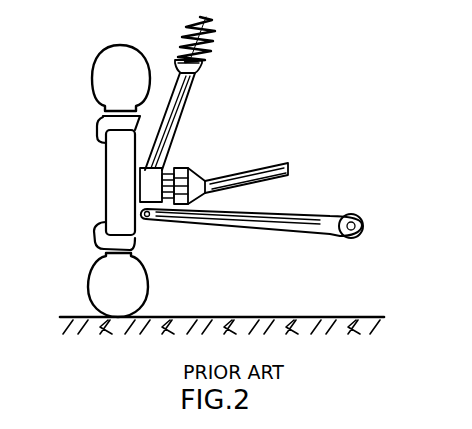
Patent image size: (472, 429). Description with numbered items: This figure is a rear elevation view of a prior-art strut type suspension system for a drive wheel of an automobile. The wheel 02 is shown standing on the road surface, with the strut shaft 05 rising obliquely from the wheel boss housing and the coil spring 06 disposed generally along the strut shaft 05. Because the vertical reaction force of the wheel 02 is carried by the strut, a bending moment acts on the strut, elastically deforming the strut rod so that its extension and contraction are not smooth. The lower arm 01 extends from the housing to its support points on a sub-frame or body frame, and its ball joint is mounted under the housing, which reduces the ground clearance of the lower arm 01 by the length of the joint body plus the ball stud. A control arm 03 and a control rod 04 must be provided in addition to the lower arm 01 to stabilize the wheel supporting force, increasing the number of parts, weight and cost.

The lower arm 01 is at (337, 222).
The wheel 02 is at (100, 79).
The control arm 03 is at (171, 218).
The control rod 04 is at (272, 224).
The strut shaft 05 is at (191, 97).
The coil spring 06 is at (213, 43).